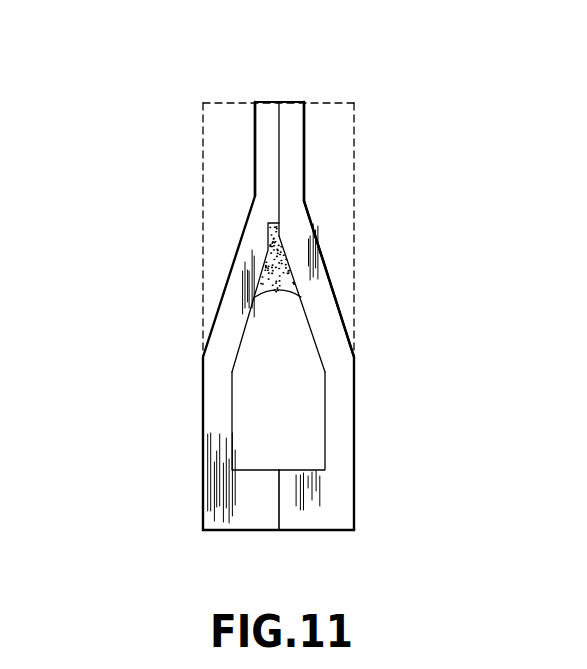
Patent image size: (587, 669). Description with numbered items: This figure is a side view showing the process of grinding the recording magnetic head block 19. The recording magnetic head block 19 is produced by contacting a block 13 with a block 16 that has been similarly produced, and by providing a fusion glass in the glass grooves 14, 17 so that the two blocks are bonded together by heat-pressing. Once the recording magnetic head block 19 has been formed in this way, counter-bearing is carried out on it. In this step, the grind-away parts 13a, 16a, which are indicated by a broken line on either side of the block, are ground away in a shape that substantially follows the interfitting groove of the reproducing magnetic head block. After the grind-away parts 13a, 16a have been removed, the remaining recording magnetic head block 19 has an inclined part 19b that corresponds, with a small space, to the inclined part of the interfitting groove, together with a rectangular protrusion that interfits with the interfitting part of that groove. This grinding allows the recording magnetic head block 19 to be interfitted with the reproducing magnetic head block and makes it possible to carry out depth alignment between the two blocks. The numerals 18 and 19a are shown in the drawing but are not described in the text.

The block 13 is at (234, 531).
The grind-away part 13a is at (210, 171).
The glass groove 14 is at (241, 405).
The block 16 is at (310, 531).
The grind-away part 16a is at (342, 174).
The glass groove 17 is at (321, 419).
The mixing chamber 18 is at (277, 297).
The recording magnetic head block 19 is at (178, 278).
The discharge outlet 19a is at (293, 108).
The inclined part 19b is at (332, 303).